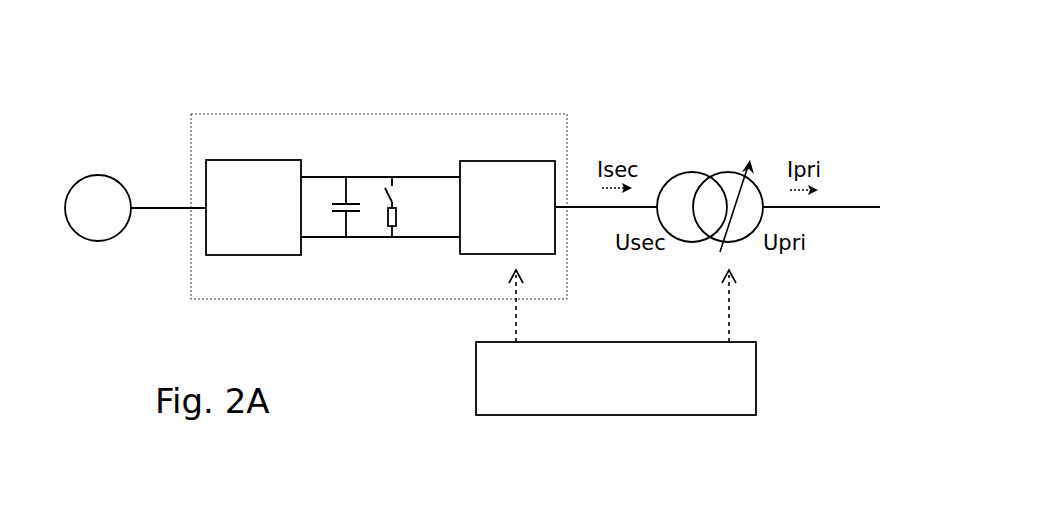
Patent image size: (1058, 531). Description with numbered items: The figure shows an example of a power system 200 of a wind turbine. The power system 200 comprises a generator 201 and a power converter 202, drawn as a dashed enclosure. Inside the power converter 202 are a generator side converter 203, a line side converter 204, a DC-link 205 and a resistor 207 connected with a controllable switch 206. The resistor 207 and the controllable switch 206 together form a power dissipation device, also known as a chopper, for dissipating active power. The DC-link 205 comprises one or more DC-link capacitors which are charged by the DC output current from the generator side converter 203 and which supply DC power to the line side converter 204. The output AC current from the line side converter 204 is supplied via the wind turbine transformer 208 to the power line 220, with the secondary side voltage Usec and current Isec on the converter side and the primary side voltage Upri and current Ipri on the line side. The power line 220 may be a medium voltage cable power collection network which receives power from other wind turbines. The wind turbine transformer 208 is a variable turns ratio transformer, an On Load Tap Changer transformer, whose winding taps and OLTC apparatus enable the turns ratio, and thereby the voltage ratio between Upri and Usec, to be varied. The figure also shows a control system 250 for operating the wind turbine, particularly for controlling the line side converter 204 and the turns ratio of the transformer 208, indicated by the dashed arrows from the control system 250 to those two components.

The power system 200 is at (247, 51).
The generator 201 is at (87, 173).
The power converter 202 is at (385, 99).
The generator side converter 203 is at (235, 159).
The line side converter 204 is at (495, 160).
The DC-link 205 is at (340, 190).
The controllable switch 206 is at (394, 182).
The resistor 207 is at (395, 218).
The wind turbine transformer 208 is at (702, 173).
The power line 220 is at (855, 198).
The control system 250 is at (567, 422).